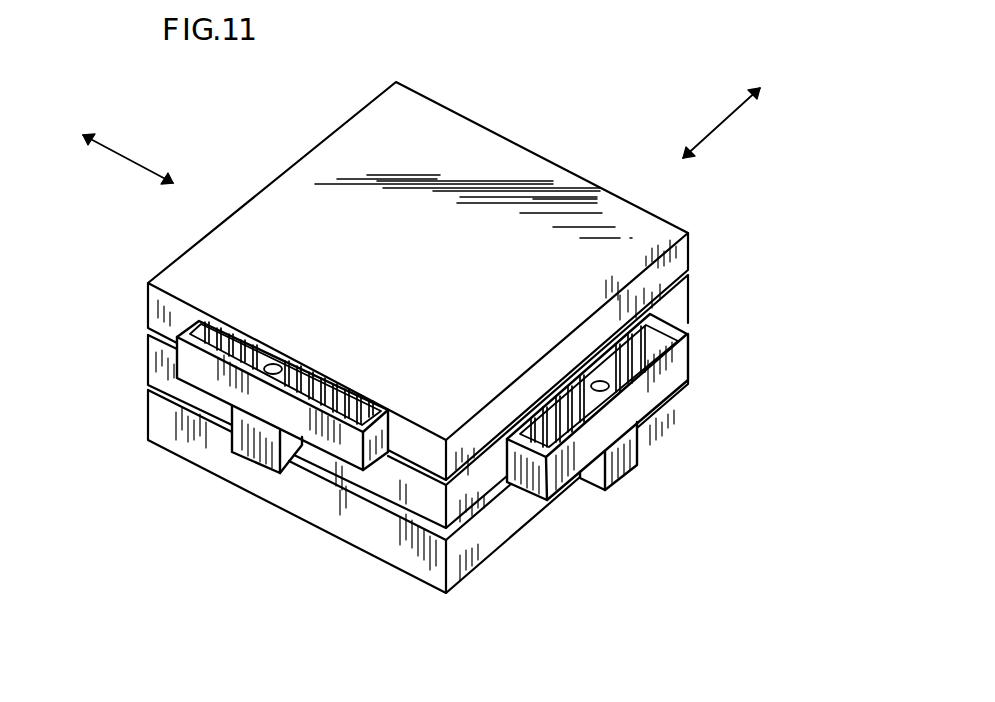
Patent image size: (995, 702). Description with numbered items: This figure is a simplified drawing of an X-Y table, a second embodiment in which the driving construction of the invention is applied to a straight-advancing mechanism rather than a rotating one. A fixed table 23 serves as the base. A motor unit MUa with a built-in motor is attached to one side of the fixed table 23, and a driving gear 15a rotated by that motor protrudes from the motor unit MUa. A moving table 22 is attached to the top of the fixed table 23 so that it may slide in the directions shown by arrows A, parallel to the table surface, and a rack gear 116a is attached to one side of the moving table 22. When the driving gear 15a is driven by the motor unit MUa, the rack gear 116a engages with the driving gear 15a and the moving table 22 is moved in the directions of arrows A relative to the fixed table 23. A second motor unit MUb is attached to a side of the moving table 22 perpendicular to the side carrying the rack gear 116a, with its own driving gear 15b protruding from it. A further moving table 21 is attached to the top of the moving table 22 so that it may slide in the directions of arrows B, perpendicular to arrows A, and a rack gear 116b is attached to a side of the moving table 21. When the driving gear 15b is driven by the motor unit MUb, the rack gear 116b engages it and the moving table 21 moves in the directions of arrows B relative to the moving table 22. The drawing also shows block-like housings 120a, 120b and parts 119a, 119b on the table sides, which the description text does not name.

The moving table 21 is at (524, 172).
The moving table 22 is at (148, 370).
The fixed table 23 is at (148, 432).
The connector housing a 119a is at (684, 328).
The connector housing b 119b is at (185, 322).
The connector block a 120a is at (651, 433).
The connector block b 120b is at (331, 414).
The rack gear 116a is at (612, 333).
The rack gear 116b is at (325, 397).
The driving gear 15a is at (595, 383).
The driving gear 15b is at (272, 363).
The motor unit MUa is at (585, 488).
The motor unit MUb is at (252, 462).
The arrows A is at (721, 123).
The arrows B is at (128, 167).